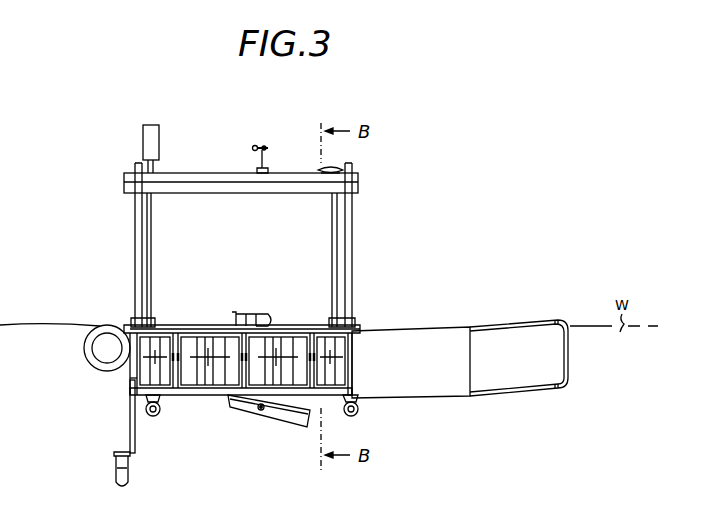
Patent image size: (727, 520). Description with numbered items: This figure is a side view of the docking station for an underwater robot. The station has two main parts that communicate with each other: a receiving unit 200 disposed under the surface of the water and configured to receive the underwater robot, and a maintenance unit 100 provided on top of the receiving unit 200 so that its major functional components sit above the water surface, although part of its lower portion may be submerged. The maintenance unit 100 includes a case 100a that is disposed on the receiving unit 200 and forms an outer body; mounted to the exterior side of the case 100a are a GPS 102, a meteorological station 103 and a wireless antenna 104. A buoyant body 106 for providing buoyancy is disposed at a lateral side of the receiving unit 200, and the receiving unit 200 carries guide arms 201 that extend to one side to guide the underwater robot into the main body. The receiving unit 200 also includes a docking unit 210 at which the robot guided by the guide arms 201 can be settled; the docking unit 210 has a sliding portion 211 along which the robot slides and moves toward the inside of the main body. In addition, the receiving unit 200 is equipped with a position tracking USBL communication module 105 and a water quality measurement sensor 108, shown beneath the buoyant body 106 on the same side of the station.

The maintenance unit 100 is at (373, 220).
The case 100a is at (194, 198).
The GPS 102 is at (342, 164).
The meteorological station 103 is at (255, 144).
The wireless antenna 104 is at (143, 142).
The USBL communication module 105 is at (131, 460).
The buoyant body 106 is at (105, 339).
The water quality measurement sensor 108 is at (135, 427).
The receiving unit 200 is at (95, 436).
The guide arms 201 is at (532, 329).
The docking unit 210 is at (289, 430).
The sliding portion 211 is at (260, 416).